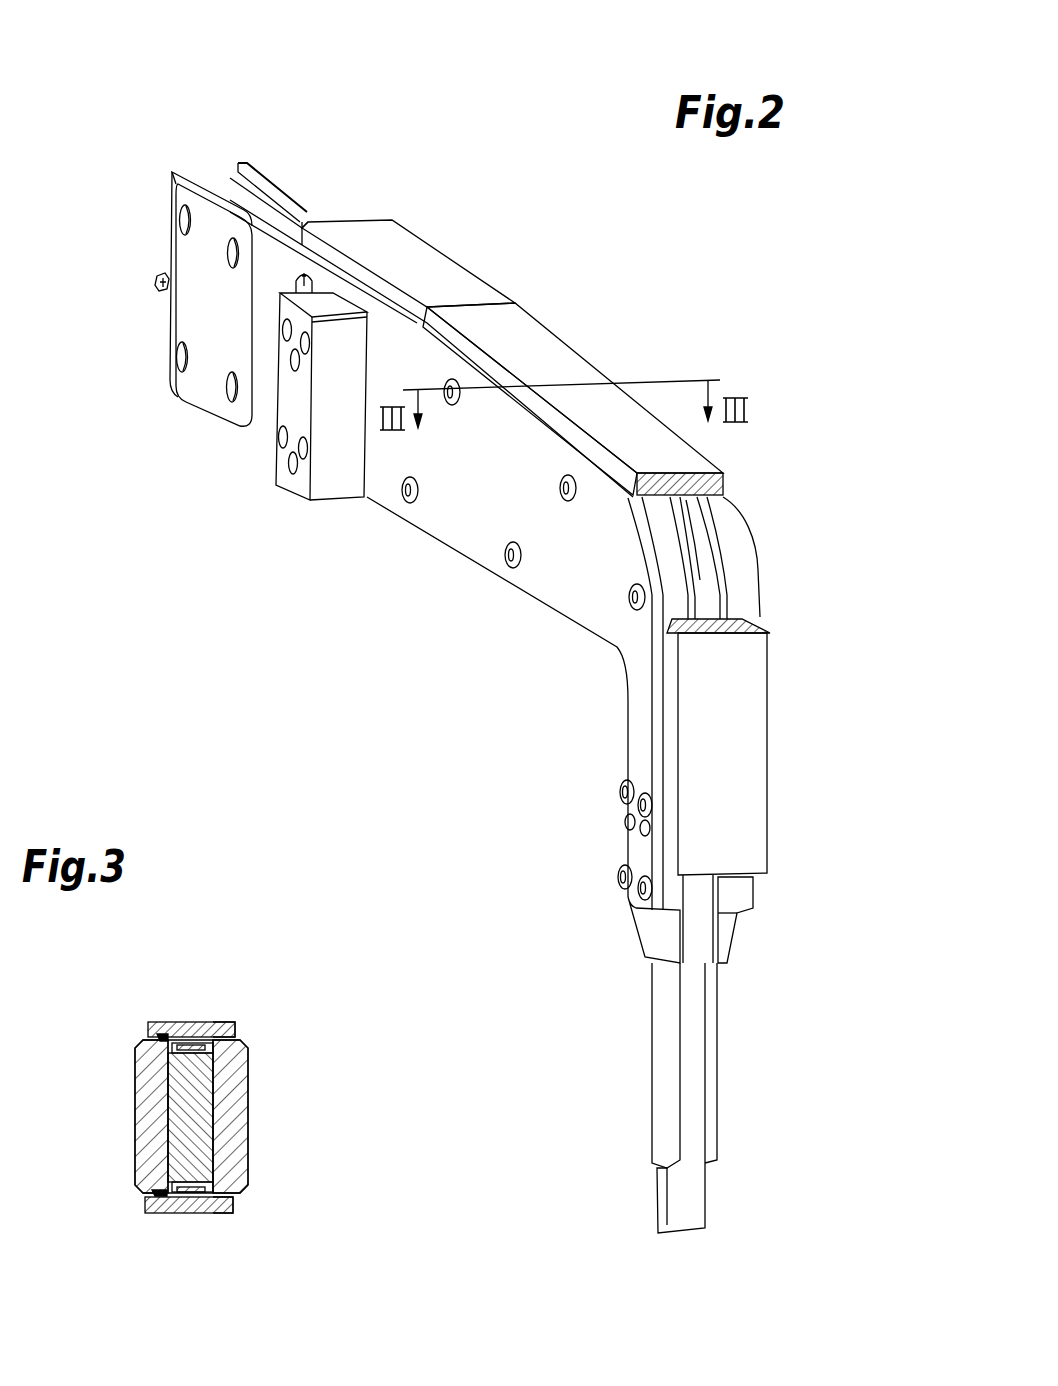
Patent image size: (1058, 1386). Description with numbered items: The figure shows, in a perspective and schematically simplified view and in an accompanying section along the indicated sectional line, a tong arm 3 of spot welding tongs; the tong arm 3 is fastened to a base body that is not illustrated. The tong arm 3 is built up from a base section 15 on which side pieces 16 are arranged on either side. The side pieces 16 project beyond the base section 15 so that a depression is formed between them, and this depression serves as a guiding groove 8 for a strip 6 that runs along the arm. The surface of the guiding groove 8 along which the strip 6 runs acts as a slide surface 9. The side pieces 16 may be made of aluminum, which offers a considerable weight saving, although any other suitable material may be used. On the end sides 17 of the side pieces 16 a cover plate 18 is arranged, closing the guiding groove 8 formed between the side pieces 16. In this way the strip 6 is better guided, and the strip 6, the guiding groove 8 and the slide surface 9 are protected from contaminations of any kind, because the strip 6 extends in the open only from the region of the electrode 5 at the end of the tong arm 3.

In FIG. 2, the tong arm 3 is at (278, 597).
In FIG. 2, the electrode 5 is at (662, 1198).
In FIG. 2, the strip 6 is at (692, 1082).
In FIG. 3, the strip 6 is at (192, 1040).
In FIG. 2, the guiding groove 8 is at (702, 573).
In FIG. 3, the guiding groove 8 is at (160, 1036).
In FIG. 2, the slide surface 9 is at (268, 198).
In FIG. 3, the slide surface 9 is at (226, 1028).
In FIG. 2, the base section 15 is at (202, 140).
In FIG. 3, the base section 15 is at (195, 1132).
In FIG. 2, the side pieces 16 is at (737, 558).
In FIG. 3, the side pieces 16 is at (150, 1138).
In FIG. 2, the end sides 17 is at (270, 200).
In FIG. 2, the cover plate 18 is at (430, 273).
In FIG. 3, the cover plate 18 is at (212, 1032).